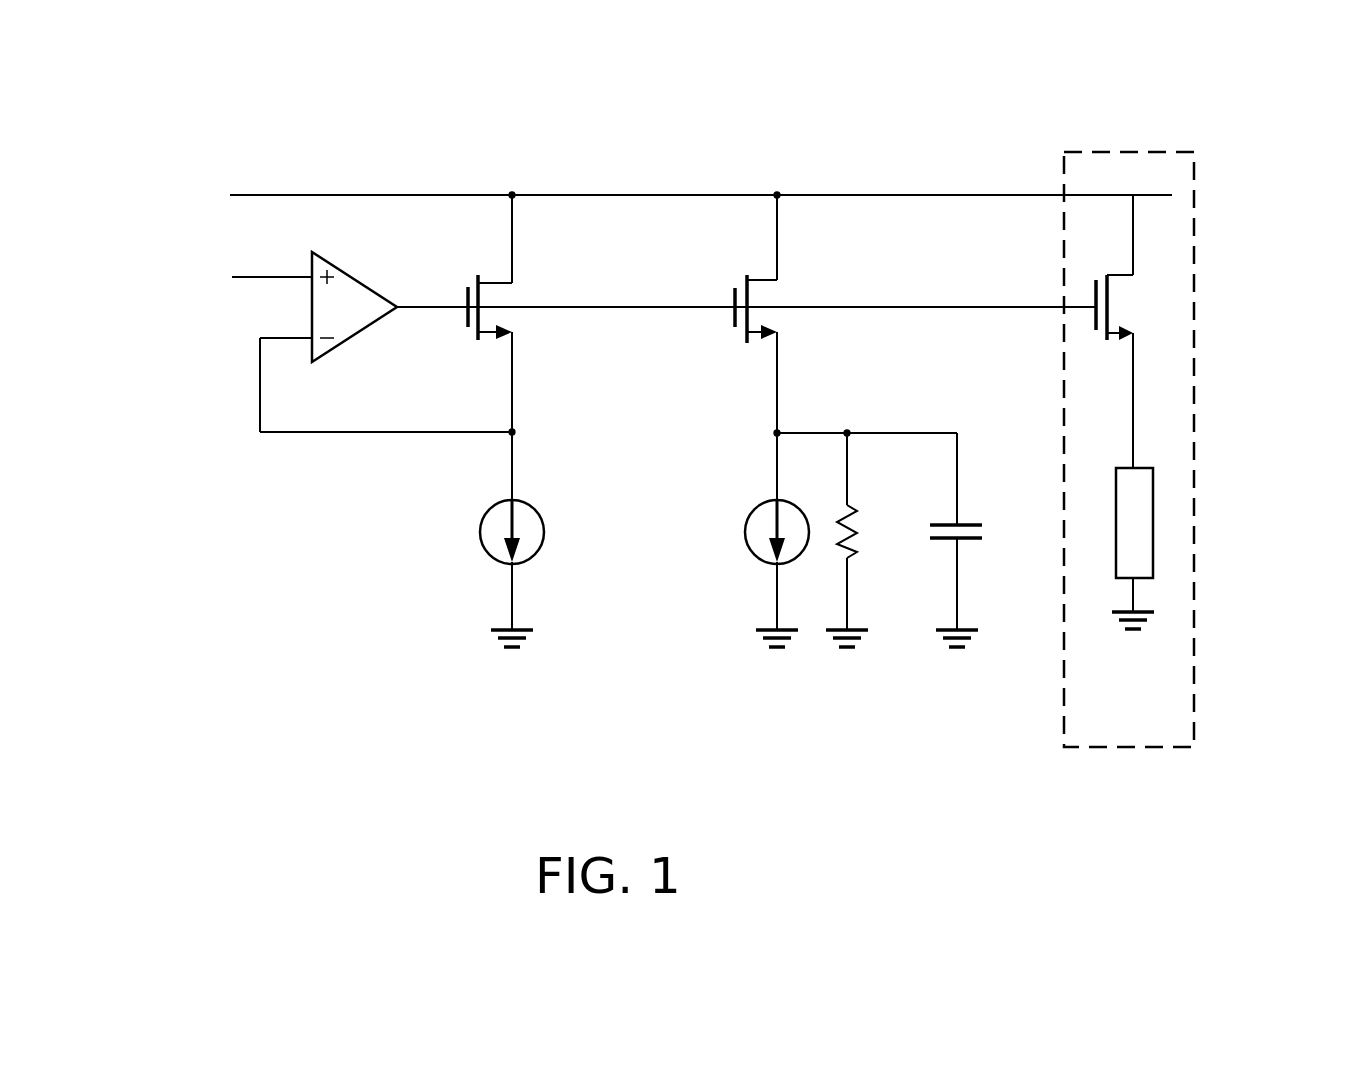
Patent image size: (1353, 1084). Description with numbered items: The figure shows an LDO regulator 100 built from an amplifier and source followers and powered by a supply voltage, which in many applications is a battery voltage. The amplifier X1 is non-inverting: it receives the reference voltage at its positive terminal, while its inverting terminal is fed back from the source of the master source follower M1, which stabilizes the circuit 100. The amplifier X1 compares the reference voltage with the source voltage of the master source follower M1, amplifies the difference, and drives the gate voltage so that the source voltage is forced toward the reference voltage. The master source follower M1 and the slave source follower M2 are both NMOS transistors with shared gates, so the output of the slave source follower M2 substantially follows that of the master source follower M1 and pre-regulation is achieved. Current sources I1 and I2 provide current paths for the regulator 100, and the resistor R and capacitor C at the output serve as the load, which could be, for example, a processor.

The LDO regulator 100 is at (705, 479).
The amplifier X1 is at (356, 338).
The master source follower M1 is at (488, 338).
The slave source follower M2 is at (782, 315).
The current source I1 is at (545, 530).
The current source I2 is at (745, 532).
The resistor R is at (858, 523).
The capacitor C is at (985, 532).